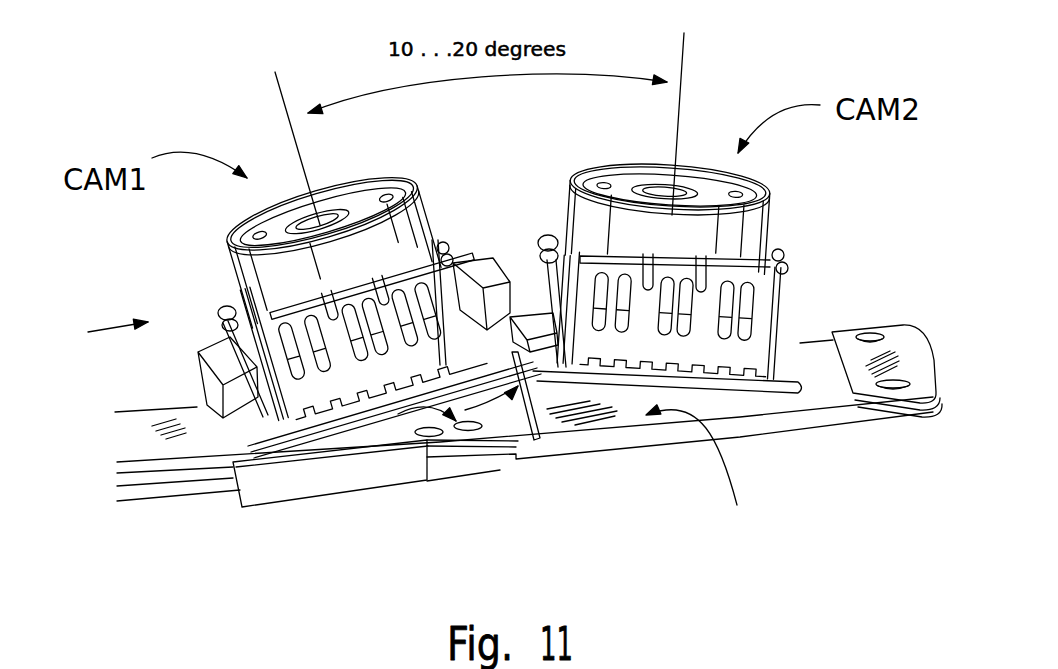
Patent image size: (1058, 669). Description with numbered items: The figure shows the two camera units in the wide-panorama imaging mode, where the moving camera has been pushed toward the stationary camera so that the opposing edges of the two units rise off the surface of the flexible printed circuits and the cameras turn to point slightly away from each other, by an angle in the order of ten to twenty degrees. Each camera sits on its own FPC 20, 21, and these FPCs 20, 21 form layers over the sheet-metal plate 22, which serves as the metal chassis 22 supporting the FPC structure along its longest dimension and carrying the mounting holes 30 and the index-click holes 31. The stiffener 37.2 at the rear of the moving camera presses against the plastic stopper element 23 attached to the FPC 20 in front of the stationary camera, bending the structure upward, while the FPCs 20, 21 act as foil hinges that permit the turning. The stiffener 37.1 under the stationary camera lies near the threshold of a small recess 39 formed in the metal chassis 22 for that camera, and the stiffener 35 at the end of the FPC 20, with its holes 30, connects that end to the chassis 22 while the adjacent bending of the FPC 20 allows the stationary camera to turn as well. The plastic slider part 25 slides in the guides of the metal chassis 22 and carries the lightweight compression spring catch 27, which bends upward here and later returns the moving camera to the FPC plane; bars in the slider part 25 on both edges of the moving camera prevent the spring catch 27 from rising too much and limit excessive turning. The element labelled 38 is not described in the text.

The FPC 20 is at (115, 477).
The FPC 21 is at (195, 417).
The metal chassis 22 is at (612, 440).
The stopper element 23 is at (535, 318).
The slider part 25 is at (215, 350).
The compression spring catch 27 is at (497, 320).
The holes 30 is at (887, 388).
The index-click holes 31 is at (425, 430).
The stiffener 35 is at (893, 335).
The stiffener 37.1 is at (750, 388).
The stiffener 37.2 is at (293, 428).
The pin 38 is at (509, 355).
The recess 39 is at (705, 478).